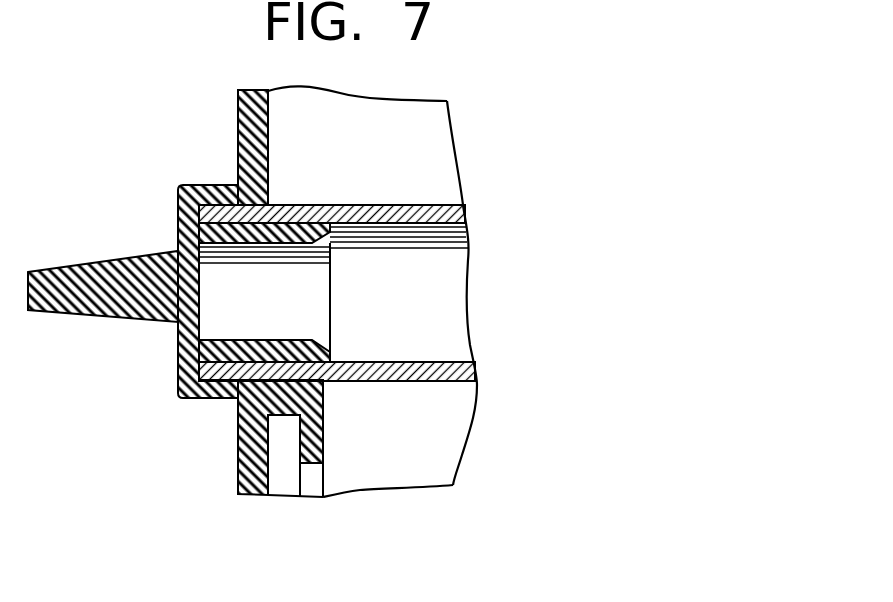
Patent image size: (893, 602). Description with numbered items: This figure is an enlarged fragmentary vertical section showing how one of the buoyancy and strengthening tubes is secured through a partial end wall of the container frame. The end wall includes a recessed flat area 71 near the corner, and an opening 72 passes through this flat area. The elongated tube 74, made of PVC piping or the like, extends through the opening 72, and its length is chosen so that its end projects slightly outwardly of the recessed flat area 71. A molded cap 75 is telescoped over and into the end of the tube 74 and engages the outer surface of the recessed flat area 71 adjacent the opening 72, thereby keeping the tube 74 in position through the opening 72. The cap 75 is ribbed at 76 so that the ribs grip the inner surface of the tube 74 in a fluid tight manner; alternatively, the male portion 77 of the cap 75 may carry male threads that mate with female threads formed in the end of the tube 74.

The recessed flat area 71 is at (238, 443).
The opening 72 is at (268, 190).
The elongated tube 74 is at (427, 203).
The molded cap 75 is at (107, 320).
The ribs 76 is at (273, 347).
The male portion 77 is at (270, 232).